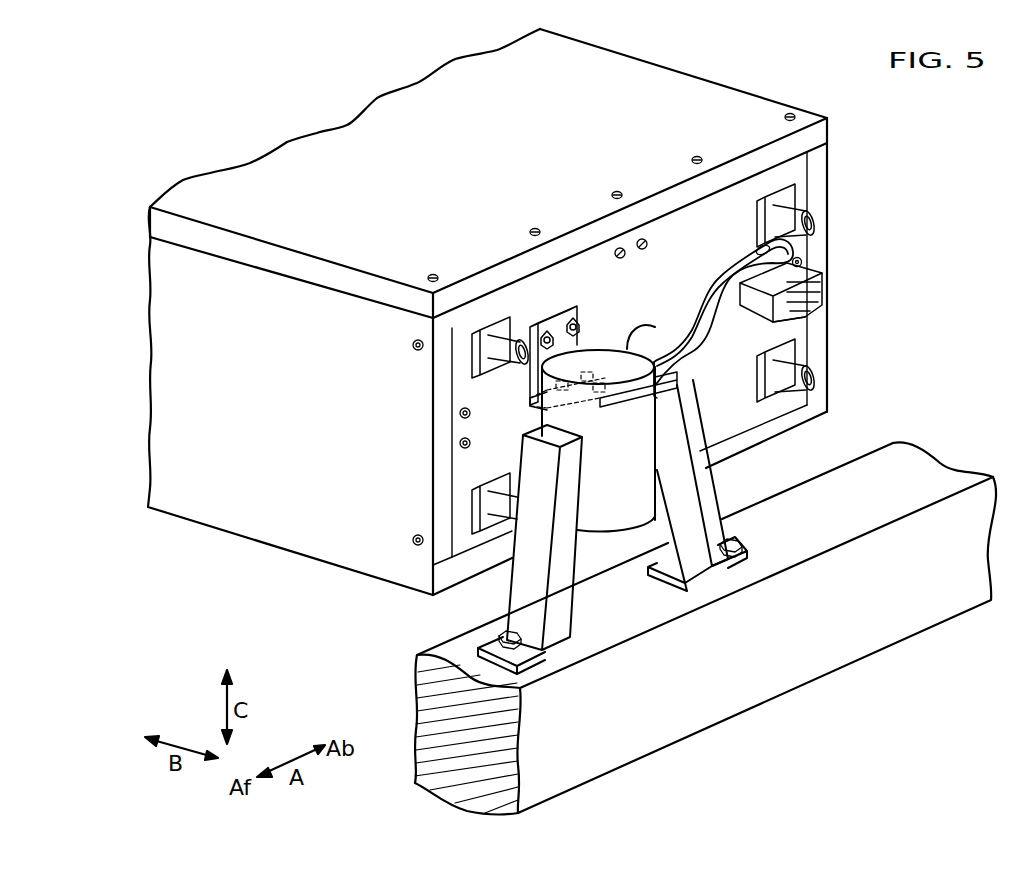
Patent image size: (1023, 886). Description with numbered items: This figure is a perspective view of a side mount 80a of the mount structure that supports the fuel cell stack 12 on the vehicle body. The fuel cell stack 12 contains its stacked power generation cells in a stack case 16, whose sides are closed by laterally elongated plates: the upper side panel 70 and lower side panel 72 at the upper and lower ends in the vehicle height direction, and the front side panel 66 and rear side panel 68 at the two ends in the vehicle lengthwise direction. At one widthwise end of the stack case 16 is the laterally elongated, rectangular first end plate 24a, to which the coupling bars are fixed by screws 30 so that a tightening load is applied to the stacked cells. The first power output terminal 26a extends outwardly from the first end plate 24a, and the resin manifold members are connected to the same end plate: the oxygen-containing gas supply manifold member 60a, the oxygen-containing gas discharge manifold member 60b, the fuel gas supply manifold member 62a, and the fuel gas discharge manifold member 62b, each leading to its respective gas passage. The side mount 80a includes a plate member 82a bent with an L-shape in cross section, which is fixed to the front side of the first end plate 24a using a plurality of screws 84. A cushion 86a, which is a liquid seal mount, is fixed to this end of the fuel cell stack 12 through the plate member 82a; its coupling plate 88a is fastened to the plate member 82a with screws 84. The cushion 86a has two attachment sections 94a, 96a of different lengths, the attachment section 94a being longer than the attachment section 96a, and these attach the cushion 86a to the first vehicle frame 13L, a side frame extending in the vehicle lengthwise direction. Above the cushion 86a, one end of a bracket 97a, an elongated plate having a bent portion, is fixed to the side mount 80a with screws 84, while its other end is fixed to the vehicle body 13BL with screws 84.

The fuel cell stack 12 is at (193, 174).
The stack case 16 is at (299, 153).
The upper side panel 70 is at (691, 88).
The front side panel 66 is at (350, 552).
The rear side panel 68 is at (817, 259).
The lower side panel 72 is at (775, 430).
The screws 30 is at (642, 238).
The side mount 80a is at (595, 304).
The plate member 82a is at (560, 313).
The screws 84 is at (758, 249).
The first power output terminal 26a is at (650, 330).
The bracket 97a is at (680, 363).
The coupling plate 88a is at (638, 415).
The cushion 86a is at (612, 549).
The attachment section 94a is at (698, 555).
The attachment section 96a is at (555, 605).
The oxygen-containing gas supply manifold member 60a is at (813, 222).
The oxygen-containing gas discharge manifold member 60b is at (517, 497).
The fuel gas supply manifold member 62a is at (813, 380).
The fuel gas discharge manifold member 62b is at (487, 353).
The vehicle body 13BL is at (816, 292).
The first end plate 24a is at (797, 322).
The first vehicle frame 13L is at (888, 625).